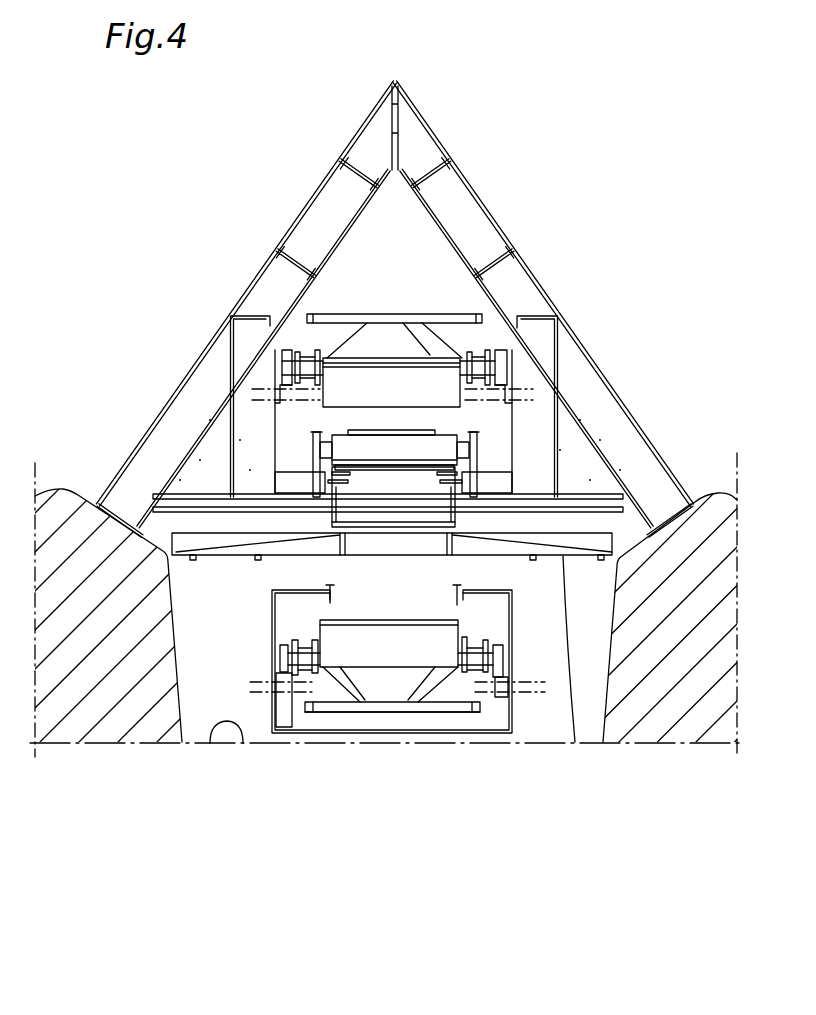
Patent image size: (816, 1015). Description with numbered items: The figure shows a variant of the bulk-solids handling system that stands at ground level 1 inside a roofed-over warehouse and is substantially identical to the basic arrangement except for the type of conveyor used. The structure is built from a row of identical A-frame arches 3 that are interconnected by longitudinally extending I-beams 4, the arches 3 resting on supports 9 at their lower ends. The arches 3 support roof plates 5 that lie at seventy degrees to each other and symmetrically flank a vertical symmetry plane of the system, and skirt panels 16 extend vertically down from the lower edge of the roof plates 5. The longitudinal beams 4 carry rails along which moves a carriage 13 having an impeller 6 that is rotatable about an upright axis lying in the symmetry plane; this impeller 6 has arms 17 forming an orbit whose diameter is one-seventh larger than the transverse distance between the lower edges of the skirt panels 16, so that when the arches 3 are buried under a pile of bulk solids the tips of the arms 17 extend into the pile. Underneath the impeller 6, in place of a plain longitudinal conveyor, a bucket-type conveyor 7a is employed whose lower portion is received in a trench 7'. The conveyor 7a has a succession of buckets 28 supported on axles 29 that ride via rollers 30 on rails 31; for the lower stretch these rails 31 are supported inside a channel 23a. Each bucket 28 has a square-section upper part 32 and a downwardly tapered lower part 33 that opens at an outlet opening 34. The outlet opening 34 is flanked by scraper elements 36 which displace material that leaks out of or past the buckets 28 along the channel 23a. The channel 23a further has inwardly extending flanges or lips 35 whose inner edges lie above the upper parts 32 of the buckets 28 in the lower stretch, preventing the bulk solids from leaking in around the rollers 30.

The ground level 1 is at (212, 748).
The A-frame arch 3 is at (513, 300).
The I-beam 4 is at (535, 487).
The roof plate 5 is at (489, 217).
The impeller 6 is at (388, 552).
The trench 7' is at (640, 605).
The bucket-type conveyor 7a is at (447, 758).
The base plate 9 is at (122, 500).
The carriage 13 is at (406, 511).
The skirt panel 16 is at (232, 372).
The arm 17 is at (575, 742).
The channel 23a is at (242, 707).
The bucket 28 is at (317, 430).
The axle 29 is at (293, 348).
The roller 30 is at (285, 360).
The rail 31 is at (273, 393).
The upper part 32 is at (409, 635).
The lower part 33 is at (352, 714).
The outlet opening 34 is at (401, 298).
The flange 35 is at (330, 605).
The scraper element 36 is at (330, 317).